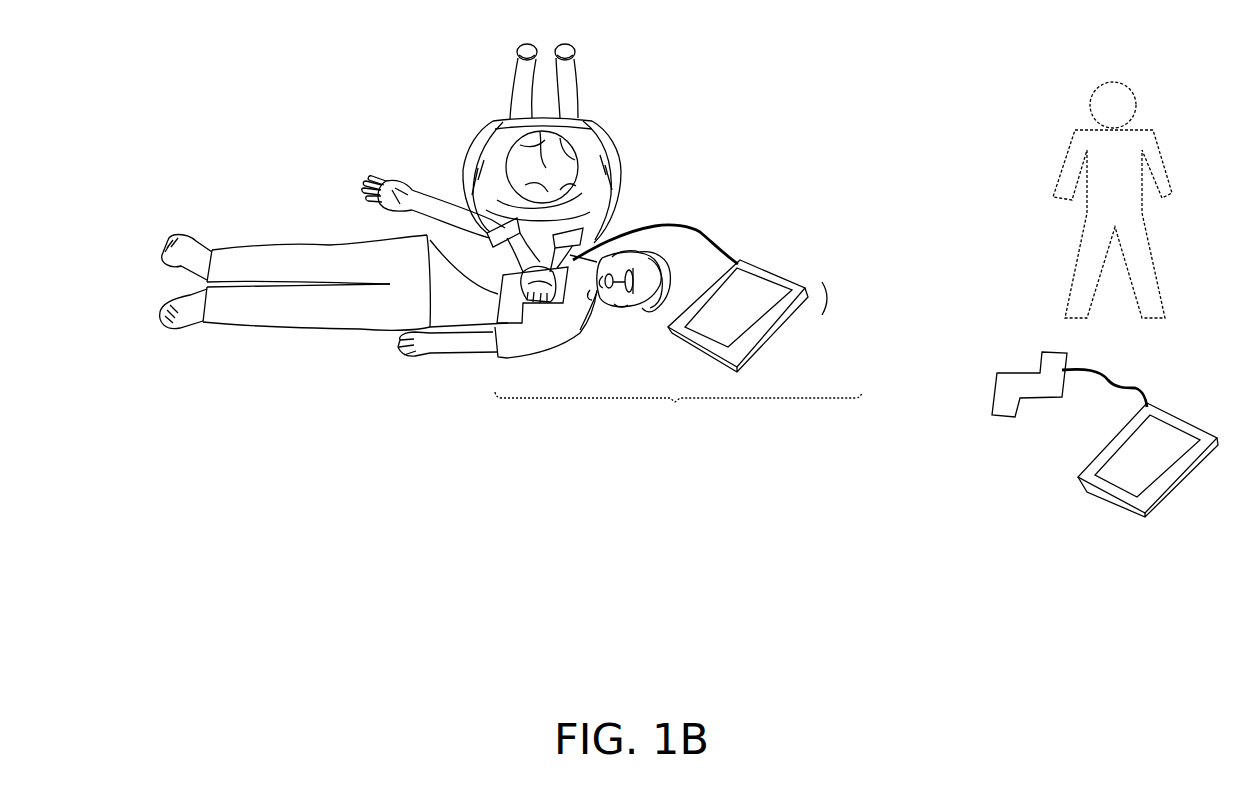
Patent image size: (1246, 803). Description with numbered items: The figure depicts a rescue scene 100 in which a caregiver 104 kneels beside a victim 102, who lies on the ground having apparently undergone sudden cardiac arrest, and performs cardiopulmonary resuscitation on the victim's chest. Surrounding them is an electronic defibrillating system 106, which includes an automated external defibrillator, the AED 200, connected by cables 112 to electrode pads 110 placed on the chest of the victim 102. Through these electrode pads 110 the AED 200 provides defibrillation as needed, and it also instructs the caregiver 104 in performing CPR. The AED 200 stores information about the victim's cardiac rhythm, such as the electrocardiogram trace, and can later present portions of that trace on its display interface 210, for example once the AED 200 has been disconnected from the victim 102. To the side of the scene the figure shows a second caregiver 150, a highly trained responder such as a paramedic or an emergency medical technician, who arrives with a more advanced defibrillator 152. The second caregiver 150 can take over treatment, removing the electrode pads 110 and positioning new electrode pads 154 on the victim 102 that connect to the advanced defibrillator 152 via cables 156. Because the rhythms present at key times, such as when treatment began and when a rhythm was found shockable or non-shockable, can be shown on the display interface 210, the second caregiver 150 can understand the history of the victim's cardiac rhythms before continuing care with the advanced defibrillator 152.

The rescue scene 100 is at (341, 76).
The victim 102 is at (297, 249).
The caregiver 104 is at (470, 158).
The electronic defibrillating system 106 is at (678, 411).
The electrode pads 110 is at (503, 275).
The cables 112 is at (695, 228).
The automated external defibrillator (AED) 200 is at (757, 343).
The display interface 210 is at (770, 287).
The second caregiver 150 is at (1112, 215).
The advanced defibrillator 152 is at (1166, 487).
The new electrode pads 154 is at (1025, 400).
The cables 156 is at (1133, 386).